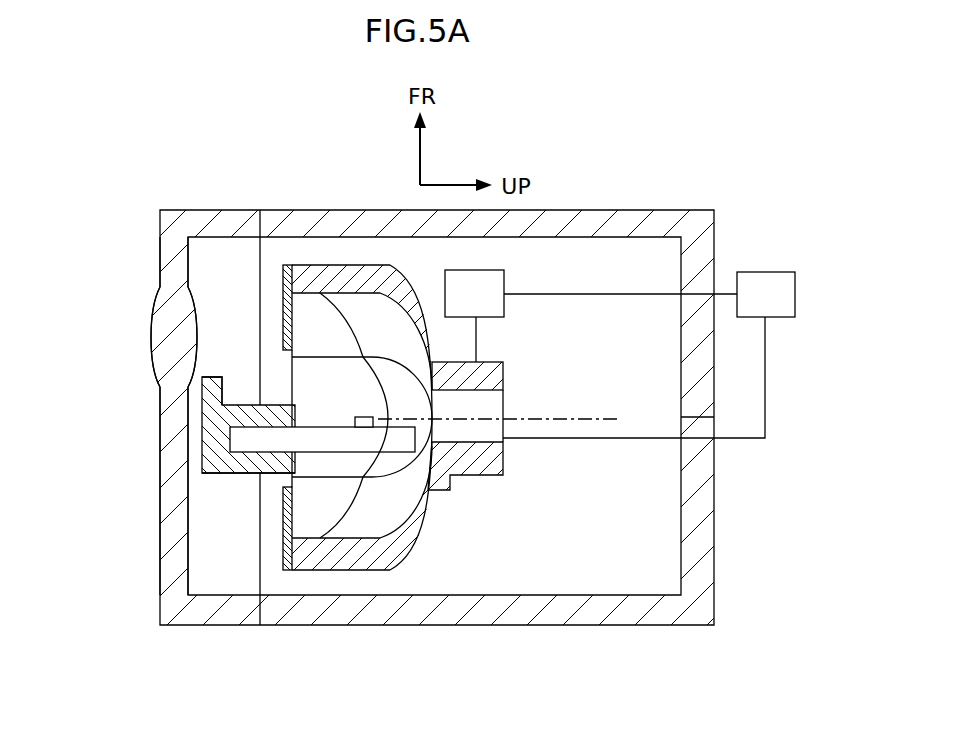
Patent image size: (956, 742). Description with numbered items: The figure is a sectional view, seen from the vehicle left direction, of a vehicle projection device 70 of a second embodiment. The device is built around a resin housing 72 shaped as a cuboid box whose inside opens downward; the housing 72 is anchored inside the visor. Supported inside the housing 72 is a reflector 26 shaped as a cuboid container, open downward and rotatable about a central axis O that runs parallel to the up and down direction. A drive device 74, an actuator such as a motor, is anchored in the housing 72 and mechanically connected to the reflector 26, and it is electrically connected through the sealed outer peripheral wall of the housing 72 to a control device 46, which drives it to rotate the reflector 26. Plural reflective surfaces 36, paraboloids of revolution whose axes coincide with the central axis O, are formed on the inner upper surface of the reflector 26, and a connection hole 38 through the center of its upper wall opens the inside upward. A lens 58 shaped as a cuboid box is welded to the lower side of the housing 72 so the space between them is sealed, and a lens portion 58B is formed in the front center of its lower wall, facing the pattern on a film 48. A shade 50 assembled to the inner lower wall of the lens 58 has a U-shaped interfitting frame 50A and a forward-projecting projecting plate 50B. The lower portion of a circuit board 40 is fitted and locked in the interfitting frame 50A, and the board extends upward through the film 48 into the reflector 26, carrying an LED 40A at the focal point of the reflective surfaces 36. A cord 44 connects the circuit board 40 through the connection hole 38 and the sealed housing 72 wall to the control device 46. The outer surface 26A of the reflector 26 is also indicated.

The vehicle projection device 70 is at (270, 172).
The housing 72 is at (591, 210).
The lens 58 is at (158, 230).
The lens portion 58B is at (151, 332).
The shade 50 is at (202, 423).
The interfitting frame 50A is at (226, 474).
The projecting plate 50B is at (203, 387).
The circuit board 40 is at (243, 427).
The LED 40A is at (364, 417).
The film 48 is at (283, 297).
The reflector 26 is at (452, 498).
The outer surface of lens 26A is at (383, 505).
The reflective surfaces 36 is at (360, 329).
The connection hole 38 is at (490, 398).
The drive device 74 is at (446, 282).
The control device 46 is at (766, 271).
The cord 44 is at (598, 441).
The central axis O is at (602, 418).